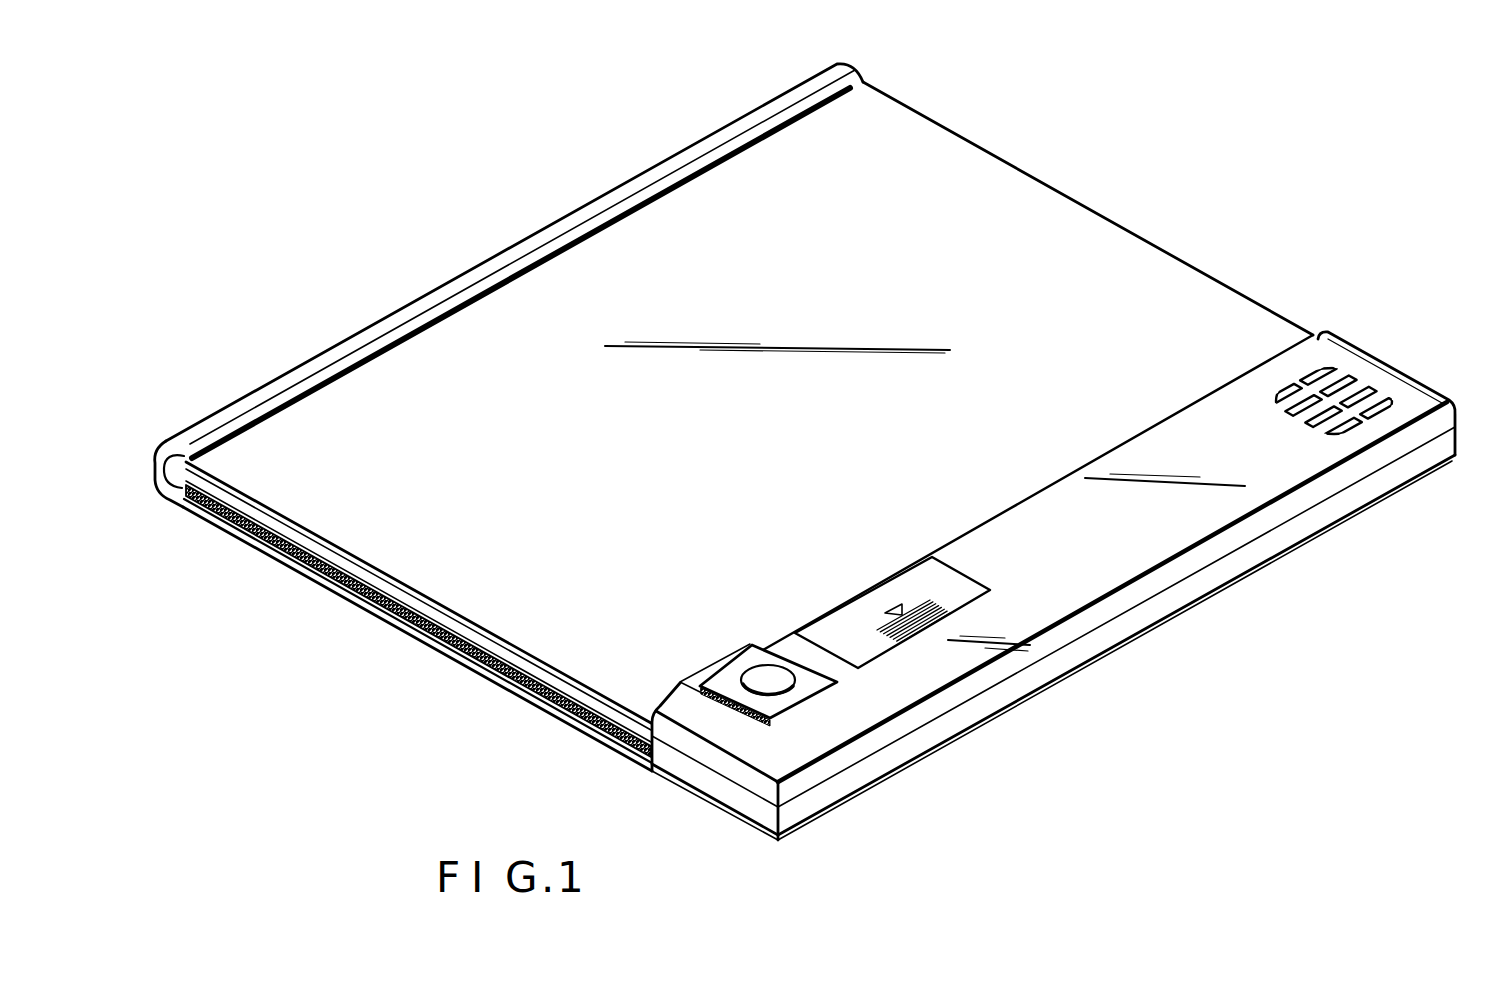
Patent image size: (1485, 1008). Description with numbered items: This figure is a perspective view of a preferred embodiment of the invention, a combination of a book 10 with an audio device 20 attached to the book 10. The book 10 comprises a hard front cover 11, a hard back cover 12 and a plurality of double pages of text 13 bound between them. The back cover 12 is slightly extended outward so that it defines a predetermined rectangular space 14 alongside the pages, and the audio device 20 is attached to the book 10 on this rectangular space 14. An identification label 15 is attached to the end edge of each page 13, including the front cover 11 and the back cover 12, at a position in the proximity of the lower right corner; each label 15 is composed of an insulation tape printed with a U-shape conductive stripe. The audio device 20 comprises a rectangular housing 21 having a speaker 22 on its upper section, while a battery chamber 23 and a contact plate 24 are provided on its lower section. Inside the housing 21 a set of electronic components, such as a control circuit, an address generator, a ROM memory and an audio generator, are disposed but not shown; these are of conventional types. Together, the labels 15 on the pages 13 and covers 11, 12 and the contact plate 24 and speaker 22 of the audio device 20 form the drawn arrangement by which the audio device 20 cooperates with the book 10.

The book 10 is at (805, 472).
The hard front cover 11 is at (343, 355).
The hard back cover 12 is at (356, 607).
The double pages of text 13 is at (503, 660).
The predetermined rectangular space 14 is at (717, 816).
The identification label 15 is at (737, 650).
The audio device 20 is at (1302, 571).
The rectangular housing 21 is at (1060, 672).
The speaker 22 is at (1365, 372).
The battery chamber 23 is at (936, 578).
The contact plate 24 is at (770, 648).